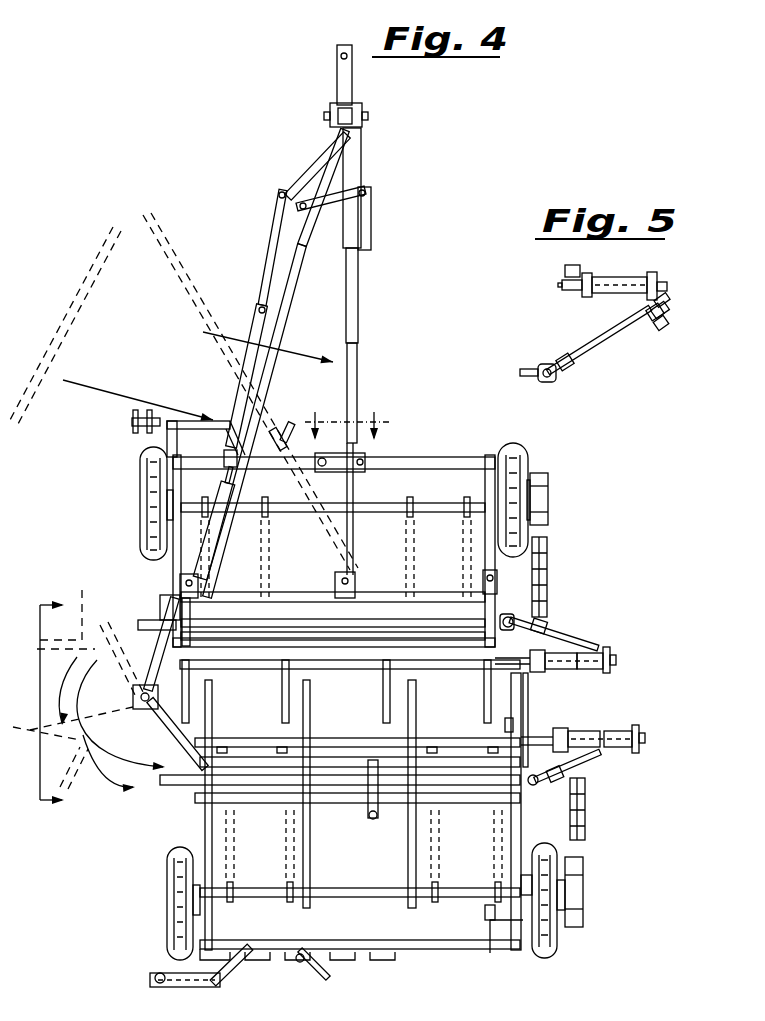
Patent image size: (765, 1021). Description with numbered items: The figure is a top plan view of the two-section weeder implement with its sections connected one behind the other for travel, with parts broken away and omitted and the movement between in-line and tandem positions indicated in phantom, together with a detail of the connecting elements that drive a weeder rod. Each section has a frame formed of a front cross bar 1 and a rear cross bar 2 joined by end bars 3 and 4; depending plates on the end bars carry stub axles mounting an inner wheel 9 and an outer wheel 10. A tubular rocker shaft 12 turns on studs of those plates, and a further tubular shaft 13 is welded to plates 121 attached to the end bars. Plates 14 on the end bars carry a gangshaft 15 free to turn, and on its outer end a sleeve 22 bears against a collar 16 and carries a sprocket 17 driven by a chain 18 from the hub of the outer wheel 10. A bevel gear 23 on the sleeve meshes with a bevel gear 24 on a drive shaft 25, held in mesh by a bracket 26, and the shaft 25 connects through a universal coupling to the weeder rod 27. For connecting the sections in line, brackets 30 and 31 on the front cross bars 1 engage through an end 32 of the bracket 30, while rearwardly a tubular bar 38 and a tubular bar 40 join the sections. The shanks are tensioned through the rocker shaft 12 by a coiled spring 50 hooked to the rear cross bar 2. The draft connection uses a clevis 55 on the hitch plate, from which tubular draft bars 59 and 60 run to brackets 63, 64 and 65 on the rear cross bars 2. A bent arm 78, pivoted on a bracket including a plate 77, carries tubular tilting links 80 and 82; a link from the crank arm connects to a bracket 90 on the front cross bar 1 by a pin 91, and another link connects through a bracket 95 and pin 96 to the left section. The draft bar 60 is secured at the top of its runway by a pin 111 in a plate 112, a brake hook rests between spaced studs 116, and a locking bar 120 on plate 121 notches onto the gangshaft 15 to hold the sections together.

In FIG. 4, the front cross bar 1 is at (452, 466).
In FIG. 4, the rear cross bar 2 is at (430, 657).
In FIG. 4, the end bar 3 is at (178, 568).
In FIG. 4, the end bar 4 is at (487, 573).
In FIG. 4, the inner wheel 9 is at (140, 470).
In FIG. 4, the outer wheel 10 is at (530, 455).
In FIG. 4, the rocker shaft 12 is at (255, 502).
In FIG. 4, the tubular shaft 13 is at (195, 800).
In FIG. 4, the plates 14 is at (344, 418).
In FIG. 4, the gangshaft 15 is at (236, 738).
In FIG. 5, the gangshaft 15 is at (603, 300).
In FIG. 5, the collar 16 is at (572, 300).
In FIG. 4, the sprocket 17 is at (39, 703).
In FIG. 5, the sprocket 17 is at (582, 277).
In FIG. 4, the chain 18 is at (545, 538).
In FIG. 4, the sleeve 22 is at (587, 652).
In FIG. 5, the sleeve 22 is at (625, 277).
In FIG. 5, the bevel gear 23 is at (666, 298).
In FIG. 5, the bevel gear 24 is at (668, 330).
In FIG. 4, the drive shaft 25 is at (580, 637).
In FIG. 5, the drive shaft 25 is at (600, 366).
In FIG. 5, the bracket 26 is at (668, 312).
In FIG. 4, the weeder rod 27 is at (165, 617).
In FIG. 5, the weeder rod 27 is at (538, 378).
In FIG. 4, the bracket 30 is at (225, 975).
In FIG. 4, the bracket 31 is at (165, 446).
In FIG. 4, the end 32 is at (153, 978).
In FIG. 4, the tubular bar 38 is at (167, 627).
In FIG. 4, the tubular bar 40 is at (134, 697).
In FIG. 4, the coiled spring 50 is at (300, 270).
In FIG. 4, the clevis 55 is at (337, 55).
In FIG. 4, the draft bar 59 is at (283, 318).
In FIG. 4, the draft bar 60 is at (340, 330).
In FIG. 4, the bracket 63 is at (368, 815).
In FIG. 4, the bracket 64 is at (350, 605).
In FIG. 4, the bracket 65 is at (190, 610).
In FIG. 4, the plate 77 is at (320, 185).
In FIG. 4, the bent arm 78 is at (323, 203).
In FIG. 4, the tubular tilting link 80 is at (340, 248).
In FIG. 4, the tubular tilting link 82 is at (272, 222).
In FIG. 4, the bracket 90 is at (288, 420).
In FIG. 4, the pin 91 is at (283, 428).
In FIG. 4, the bracket 95 is at (322, 970).
In FIG. 4, the pin 96 is at (296, 960).
In FIG. 4, the pin 111 is at (360, 470).
In FIG. 4, the plate 112 is at (387, 449).
In FIG. 4, the studs 116 is at (472, 936).
In FIG. 4, the locking bar 120 is at (513, 688).
In FIG. 4, the plate 121 is at (520, 727).